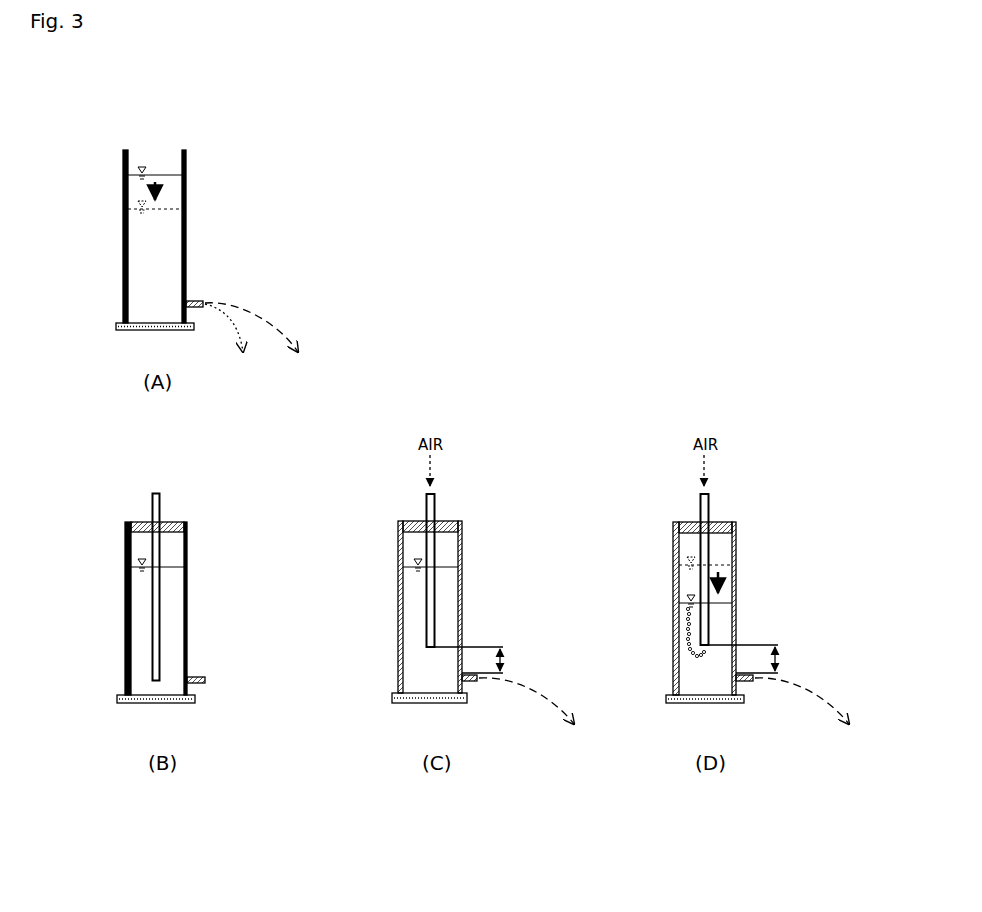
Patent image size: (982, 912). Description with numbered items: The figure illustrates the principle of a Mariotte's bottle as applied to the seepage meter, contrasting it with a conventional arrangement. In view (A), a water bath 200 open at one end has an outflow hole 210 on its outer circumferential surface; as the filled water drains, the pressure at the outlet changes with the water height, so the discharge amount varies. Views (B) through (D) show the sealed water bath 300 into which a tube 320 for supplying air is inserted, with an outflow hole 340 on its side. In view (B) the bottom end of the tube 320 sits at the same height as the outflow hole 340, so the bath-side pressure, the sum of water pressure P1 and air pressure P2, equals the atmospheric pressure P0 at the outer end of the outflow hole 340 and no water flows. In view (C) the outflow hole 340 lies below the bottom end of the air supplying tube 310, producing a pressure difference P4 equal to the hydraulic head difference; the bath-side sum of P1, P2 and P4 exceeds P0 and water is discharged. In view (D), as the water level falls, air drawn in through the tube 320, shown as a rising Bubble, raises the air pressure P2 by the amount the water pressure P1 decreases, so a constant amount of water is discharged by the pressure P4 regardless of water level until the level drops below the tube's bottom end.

The water bath 200 is at (186, 185).
The outflow hole 210 is at (197, 300).
The water bath 300 is at (126, 555).
The air supplying tube 310 is at (141, 523).
The tube 320 is at (153, 500).
The outflow hole 340 is at (197, 684).
The atmospheric pressure P0 is at (205, 679).
The water pressure P1 is at (180, 596).
The air pressure P2 is at (180, 548).
The pressure difference P4 is at (621, 660).
The air bubbles Bubble is at (689, 640).